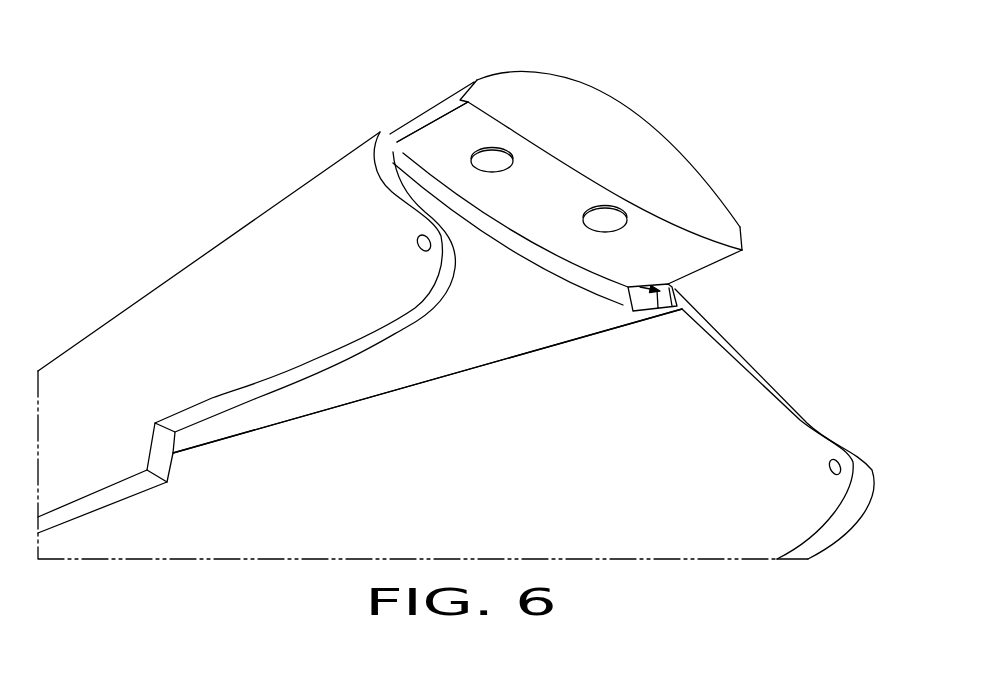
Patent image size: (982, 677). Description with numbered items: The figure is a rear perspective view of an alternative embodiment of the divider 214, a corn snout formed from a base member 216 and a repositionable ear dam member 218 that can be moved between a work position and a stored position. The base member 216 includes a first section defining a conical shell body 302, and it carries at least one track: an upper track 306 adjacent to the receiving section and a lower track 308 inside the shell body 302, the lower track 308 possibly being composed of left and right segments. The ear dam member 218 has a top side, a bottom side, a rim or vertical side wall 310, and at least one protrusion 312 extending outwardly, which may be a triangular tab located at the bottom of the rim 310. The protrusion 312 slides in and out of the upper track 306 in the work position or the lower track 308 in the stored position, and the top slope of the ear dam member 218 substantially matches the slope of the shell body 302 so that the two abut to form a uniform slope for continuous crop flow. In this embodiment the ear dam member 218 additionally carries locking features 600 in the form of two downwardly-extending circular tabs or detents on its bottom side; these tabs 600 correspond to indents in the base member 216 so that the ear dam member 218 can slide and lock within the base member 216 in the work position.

The divider 214 is at (613, 73).
The base member 216 is at (232, 290).
The ear dam member 218 is at (640, 117).
The shell body 302 is at (706, 530).
The upper track 306 is at (631, 295).
The lower track 308 is at (411, 155).
The rim 310 is at (755, 224).
The protrusion 312 is at (743, 249).
The locking features 600 is at (603, 223).